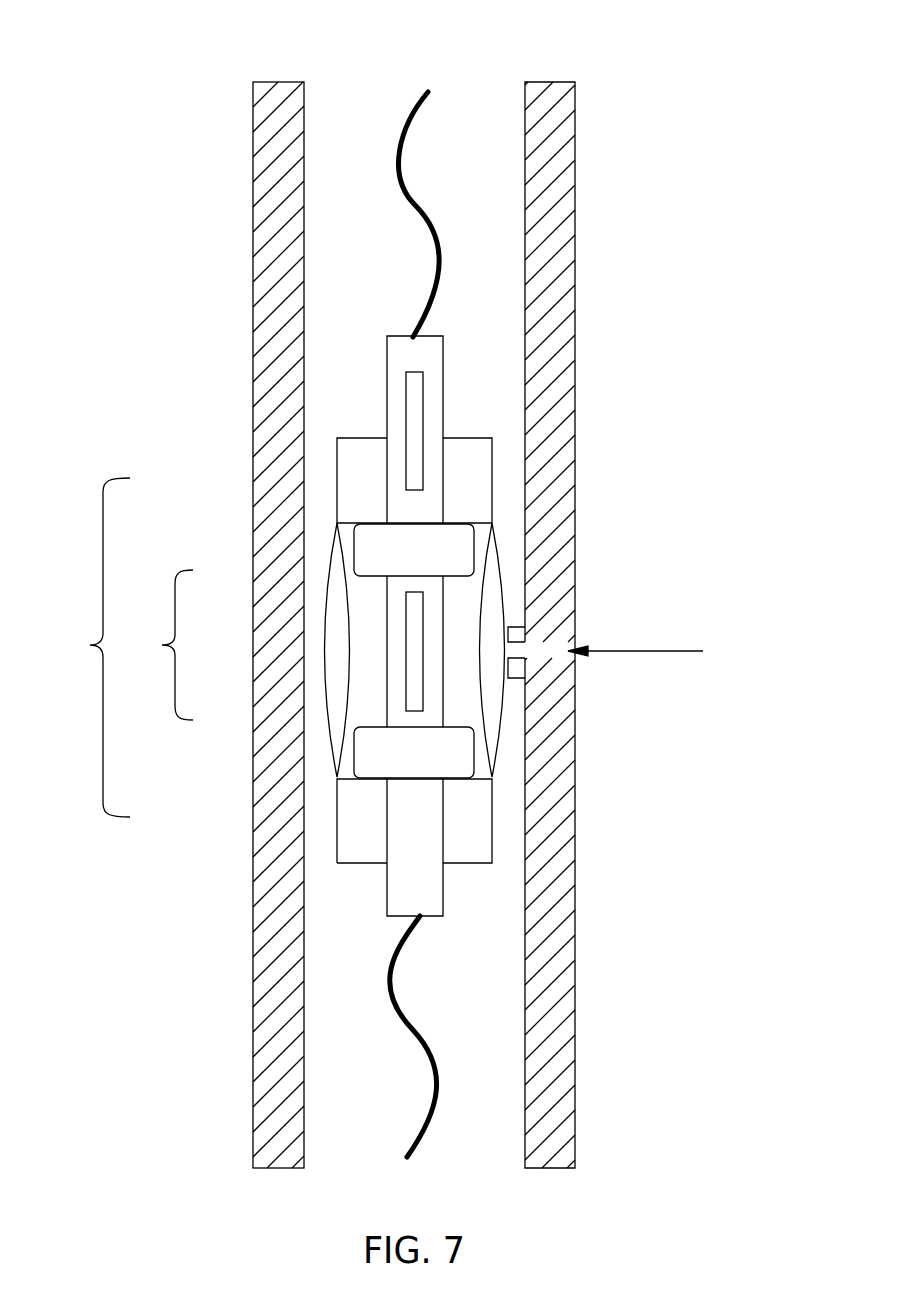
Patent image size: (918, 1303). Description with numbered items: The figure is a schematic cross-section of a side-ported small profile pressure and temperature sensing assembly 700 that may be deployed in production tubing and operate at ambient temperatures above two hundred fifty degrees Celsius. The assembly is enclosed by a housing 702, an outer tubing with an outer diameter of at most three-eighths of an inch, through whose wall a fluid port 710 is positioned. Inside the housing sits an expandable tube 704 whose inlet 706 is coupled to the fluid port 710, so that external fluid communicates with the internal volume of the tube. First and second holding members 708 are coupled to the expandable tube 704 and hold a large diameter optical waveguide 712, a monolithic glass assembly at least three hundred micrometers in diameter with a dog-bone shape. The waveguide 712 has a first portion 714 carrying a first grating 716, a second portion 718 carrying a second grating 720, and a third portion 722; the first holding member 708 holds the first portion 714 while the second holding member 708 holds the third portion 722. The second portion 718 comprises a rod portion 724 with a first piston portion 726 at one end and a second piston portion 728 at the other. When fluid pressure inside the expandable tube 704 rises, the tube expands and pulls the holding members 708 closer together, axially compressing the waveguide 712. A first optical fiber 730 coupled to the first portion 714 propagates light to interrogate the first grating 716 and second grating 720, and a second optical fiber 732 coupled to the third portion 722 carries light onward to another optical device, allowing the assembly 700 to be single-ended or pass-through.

The sensing assembly 700 is at (210, 107).
The housing 702 is at (553, 970).
The expandable tube 704 is at (493, 712).
The inlet 706 is at (518, 650).
The holding members 708 is at (472, 482).
The fluid port 710 is at (659, 652).
The large diameter optical waveguide 712 is at (90, 647).
The first portion 714 is at (408, 508).
The first grating 716 is at (413, 407).
The second portion 718 is at (155, 645).
The second grating 720 is at (413, 667).
The third portion 722 is at (407, 808).
The rod portion 724 is at (395, 625).
The first piston portion 726 is at (363, 553).
The second piston portion 728 is at (370, 752).
The first optical fiber 730 is at (448, 240).
The second optical fiber 732 is at (442, 1078).